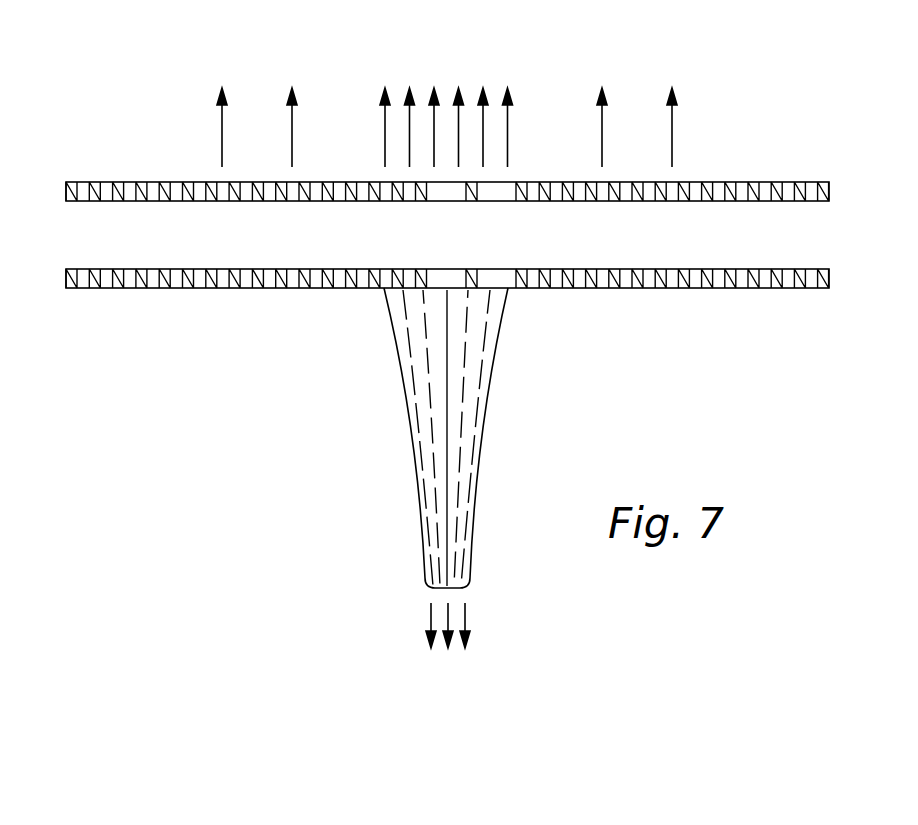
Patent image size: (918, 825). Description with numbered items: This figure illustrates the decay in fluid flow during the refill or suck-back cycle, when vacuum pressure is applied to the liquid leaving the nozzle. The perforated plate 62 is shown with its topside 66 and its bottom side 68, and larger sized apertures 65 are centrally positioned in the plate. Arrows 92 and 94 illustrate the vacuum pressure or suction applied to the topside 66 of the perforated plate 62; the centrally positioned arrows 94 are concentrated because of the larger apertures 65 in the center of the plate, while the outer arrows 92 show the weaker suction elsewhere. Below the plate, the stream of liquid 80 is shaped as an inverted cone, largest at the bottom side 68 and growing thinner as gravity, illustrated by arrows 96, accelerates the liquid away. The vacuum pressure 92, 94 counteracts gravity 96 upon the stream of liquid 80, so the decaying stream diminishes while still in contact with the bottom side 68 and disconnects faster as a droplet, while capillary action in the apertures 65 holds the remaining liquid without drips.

The perforated plate 62 is at (752, 185).
The apertures 65 is at (492, 280).
The topside of perforated plate 66 is at (139, 184).
The bottom side of perforated plate 68 is at (163, 289).
The stream of liquid 80 is at (430, 440).
The vacuum pressure arrows 92 is at (192, 87).
The vacuum pressure arrows at central portion 94 is at (367, 87).
The gravity arrows 96 is at (409, 640).